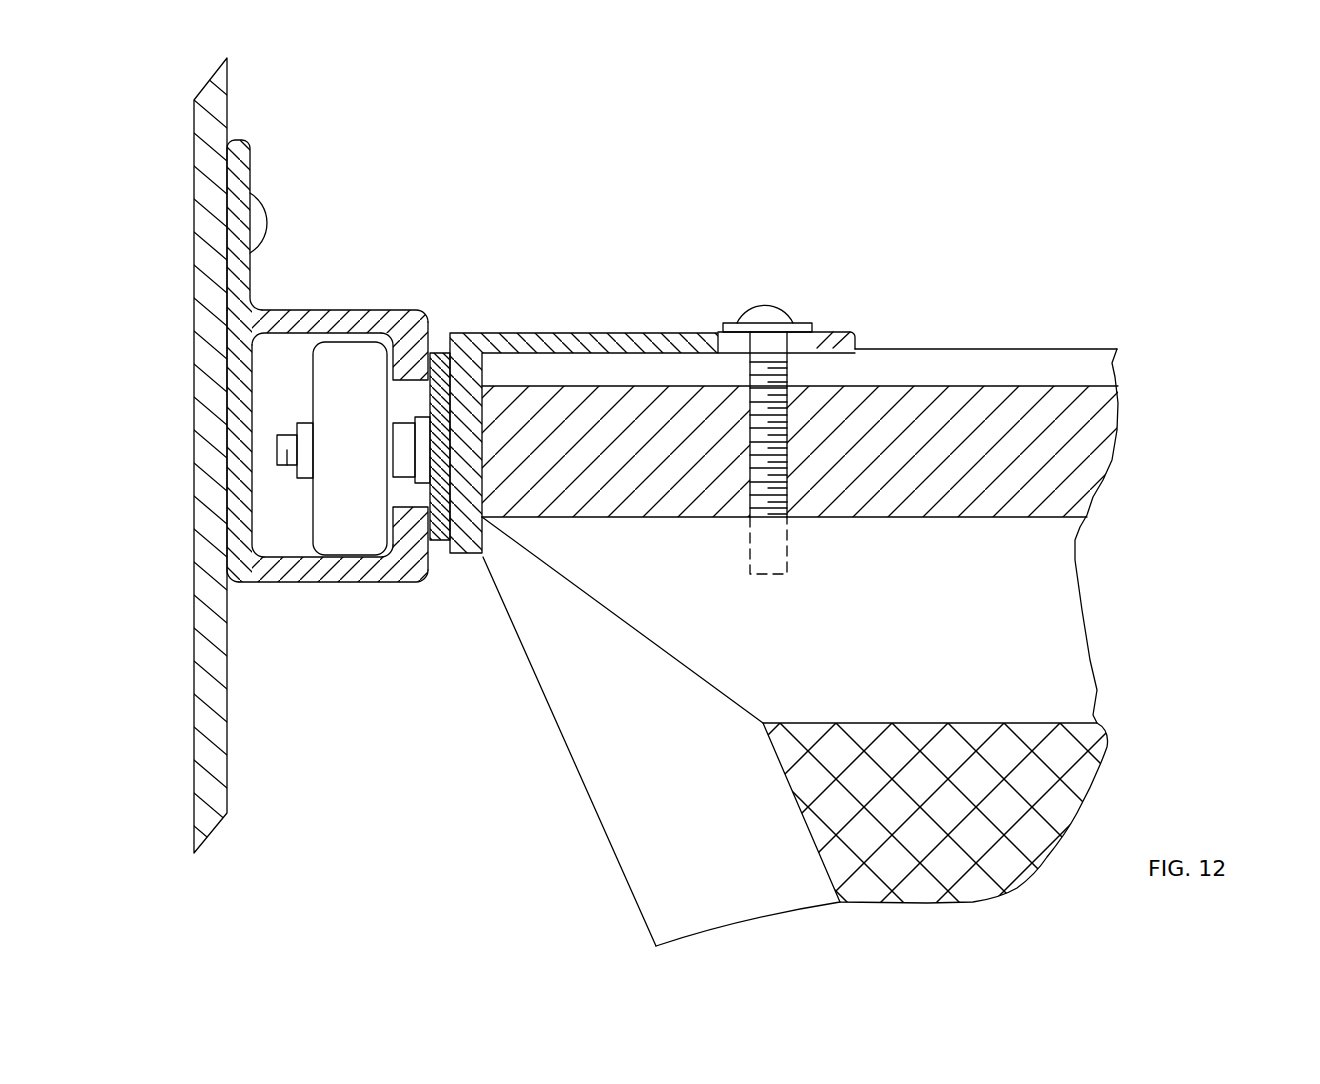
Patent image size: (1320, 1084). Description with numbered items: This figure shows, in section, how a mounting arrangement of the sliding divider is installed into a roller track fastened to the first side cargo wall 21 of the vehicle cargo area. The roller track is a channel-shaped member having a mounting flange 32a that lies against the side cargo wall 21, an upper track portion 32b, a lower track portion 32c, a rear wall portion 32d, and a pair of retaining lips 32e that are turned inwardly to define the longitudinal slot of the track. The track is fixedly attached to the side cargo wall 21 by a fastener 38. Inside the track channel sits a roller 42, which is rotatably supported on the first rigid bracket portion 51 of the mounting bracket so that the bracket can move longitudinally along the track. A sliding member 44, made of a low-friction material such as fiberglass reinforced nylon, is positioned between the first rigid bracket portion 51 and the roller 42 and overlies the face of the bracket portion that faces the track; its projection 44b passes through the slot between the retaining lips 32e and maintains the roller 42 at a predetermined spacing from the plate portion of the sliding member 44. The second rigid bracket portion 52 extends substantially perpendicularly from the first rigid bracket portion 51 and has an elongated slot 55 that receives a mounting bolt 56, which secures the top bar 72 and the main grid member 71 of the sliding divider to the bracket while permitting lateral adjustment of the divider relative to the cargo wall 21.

The first side cargo wall 21 is at (232, 735).
The mounting flange 32a is at (250, 168).
The upper track portion 32b is at (313, 322).
The lower track portion 32c is at (290, 568).
The rear wall portion 32d is at (238, 488).
The retaining lips 32e is at (412, 352).
The fastener 38 is at (266, 218).
The roller 42 is at (353, 537).
The sliding member 44 is at (437, 377).
The projection 44b is at (407, 418).
The first rigid bracket portion 51 is at (466, 533).
The second rigid bracket portion 52 is at (857, 340).
The elongated slot 55 is at (737, 327).
The mounting bolt 56 is at (776, 304).
The main grid member 71 is at (598, 823).
The top bar 72 is at (1100, 427).